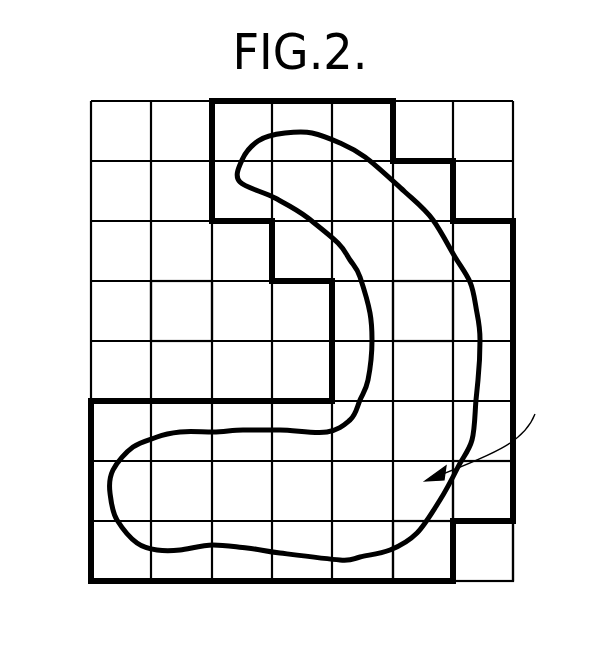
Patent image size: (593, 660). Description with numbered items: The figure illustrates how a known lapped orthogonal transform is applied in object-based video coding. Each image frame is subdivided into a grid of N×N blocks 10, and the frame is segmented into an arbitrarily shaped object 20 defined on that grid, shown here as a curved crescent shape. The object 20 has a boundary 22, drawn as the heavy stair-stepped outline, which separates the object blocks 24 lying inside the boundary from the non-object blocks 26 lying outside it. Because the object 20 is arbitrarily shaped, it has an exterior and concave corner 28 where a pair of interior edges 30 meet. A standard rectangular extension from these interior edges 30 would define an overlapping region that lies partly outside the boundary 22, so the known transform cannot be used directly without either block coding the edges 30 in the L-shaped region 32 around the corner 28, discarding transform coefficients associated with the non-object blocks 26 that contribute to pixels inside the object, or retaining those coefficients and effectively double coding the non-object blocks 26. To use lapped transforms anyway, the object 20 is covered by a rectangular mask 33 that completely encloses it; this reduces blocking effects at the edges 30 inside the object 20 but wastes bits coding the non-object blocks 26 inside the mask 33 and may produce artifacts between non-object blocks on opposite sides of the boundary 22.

The N×N blocks 10 is at (98, 195).
The rectangular mask 33 is at (121, 99).
The arbitrarily shaped object 20 is at (455, 258).
The boundary 22 is at (92, 427).
The object blocks 24 is at (438, 300).
The non-object blocks 26 is at (183, 302).
The exterior and concave corner 28 is at (458, 522).
The interior edges 30 is at (455, 497).
The L-shaped region 32 is at (486, 436).